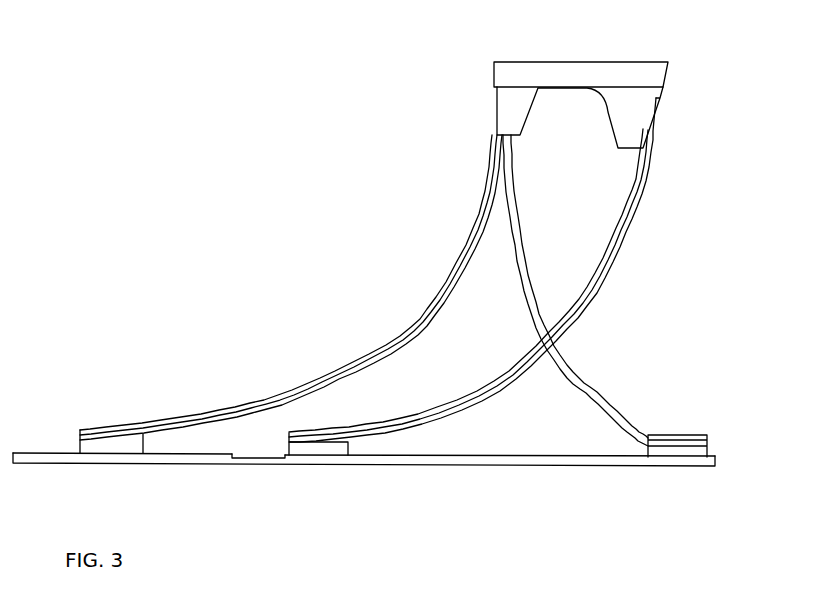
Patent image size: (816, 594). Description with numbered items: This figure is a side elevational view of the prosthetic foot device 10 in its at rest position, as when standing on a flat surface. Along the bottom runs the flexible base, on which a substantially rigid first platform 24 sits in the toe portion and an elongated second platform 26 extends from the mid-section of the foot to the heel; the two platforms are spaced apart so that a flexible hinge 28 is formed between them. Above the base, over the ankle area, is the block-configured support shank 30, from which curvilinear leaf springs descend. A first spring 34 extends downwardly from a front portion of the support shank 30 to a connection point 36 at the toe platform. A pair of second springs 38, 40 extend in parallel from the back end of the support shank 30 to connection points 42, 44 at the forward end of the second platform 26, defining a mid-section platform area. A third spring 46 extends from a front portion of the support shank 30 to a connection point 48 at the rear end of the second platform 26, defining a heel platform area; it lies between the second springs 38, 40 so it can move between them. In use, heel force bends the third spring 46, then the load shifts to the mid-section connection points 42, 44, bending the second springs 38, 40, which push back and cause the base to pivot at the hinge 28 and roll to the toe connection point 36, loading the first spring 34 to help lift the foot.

The prosthetic foot device 10 is at (280, 250).
The first platform 24 is at (364, 463).
The second platform 26 is at (502, 457).
The flexible hinge 28 is at (260, 461).
The support shank 30 is at (620, 70).
The first spring 34 is at (337, 372).
The connection point 36 is at (120, 442).
The second spring 38 is at (515, 270).
The second spring 40 is at (633, 222).
The connection point 42 is at (348, 474).
The connection point 44 is at (327, 460).
The third spring 46 is at (585, 385).
The connection point 48 is at (687, 455).